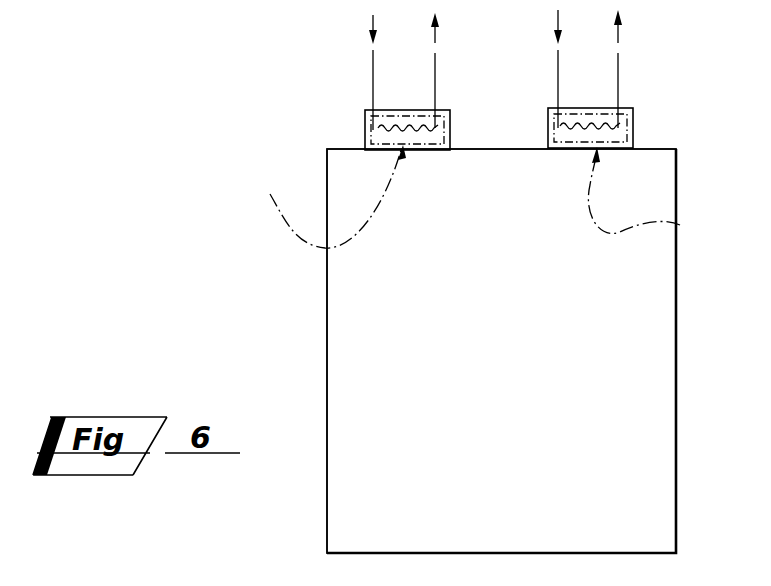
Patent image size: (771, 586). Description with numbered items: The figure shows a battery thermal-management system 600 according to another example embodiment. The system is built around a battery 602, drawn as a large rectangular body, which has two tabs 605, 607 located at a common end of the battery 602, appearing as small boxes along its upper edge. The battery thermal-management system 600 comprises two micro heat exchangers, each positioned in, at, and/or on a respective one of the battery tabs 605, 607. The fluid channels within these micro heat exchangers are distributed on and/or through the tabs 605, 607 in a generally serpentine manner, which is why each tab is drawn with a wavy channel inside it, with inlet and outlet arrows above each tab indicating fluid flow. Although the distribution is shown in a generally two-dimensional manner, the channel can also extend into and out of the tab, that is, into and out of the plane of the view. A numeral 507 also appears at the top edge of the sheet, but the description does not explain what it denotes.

The battery thermal-management system 600 is at (283, 300).
The battery 602 is at (527, 402).
The battery tab 605 is at (365, 130).
The battery tab 607 is at (633, 118).
The component (partially shown) 507 is at (283, 0).